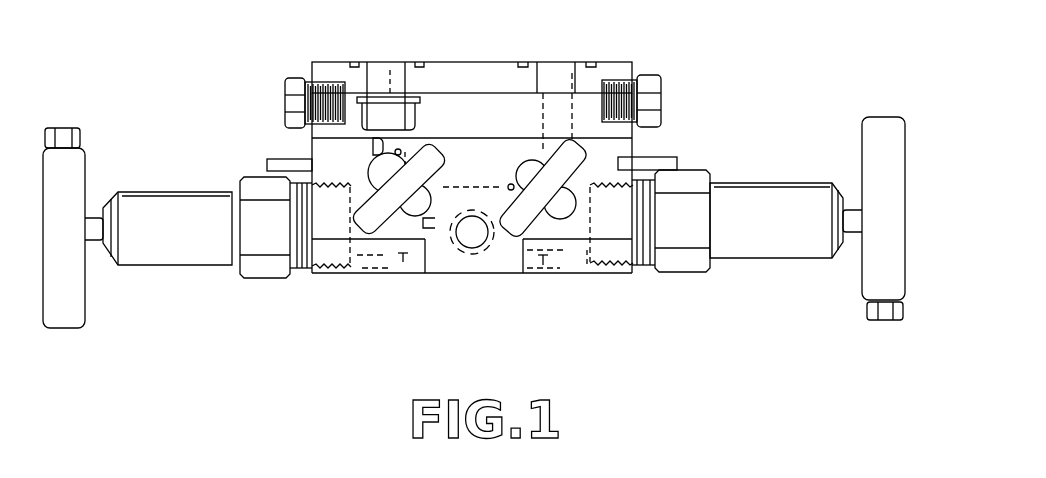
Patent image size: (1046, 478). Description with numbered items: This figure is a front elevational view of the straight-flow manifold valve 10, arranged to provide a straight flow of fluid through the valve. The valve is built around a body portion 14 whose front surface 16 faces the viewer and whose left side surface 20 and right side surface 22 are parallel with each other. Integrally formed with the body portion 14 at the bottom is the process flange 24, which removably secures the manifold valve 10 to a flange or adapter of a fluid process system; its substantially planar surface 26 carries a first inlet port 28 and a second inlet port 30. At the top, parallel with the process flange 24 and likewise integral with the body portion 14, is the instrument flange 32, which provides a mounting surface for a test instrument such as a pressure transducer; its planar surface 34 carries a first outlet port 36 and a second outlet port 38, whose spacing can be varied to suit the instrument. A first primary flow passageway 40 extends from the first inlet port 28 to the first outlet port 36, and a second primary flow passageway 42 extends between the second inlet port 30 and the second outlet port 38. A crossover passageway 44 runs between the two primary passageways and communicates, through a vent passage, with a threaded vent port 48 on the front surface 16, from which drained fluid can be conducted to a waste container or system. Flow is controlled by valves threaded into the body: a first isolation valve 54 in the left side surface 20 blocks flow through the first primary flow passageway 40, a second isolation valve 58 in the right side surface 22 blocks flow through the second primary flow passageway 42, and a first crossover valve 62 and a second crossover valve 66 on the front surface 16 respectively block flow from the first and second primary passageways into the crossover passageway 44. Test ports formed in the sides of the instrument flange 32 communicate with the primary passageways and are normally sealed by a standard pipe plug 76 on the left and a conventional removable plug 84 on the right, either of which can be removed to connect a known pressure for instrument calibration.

The straight-flow manifold valve 10 is at (208, 68).
The body portion 14 is at (677, 168).
The front surface 16 is at (455, 173).
The left side surface 20 is at (267, 165).
The right side surface 22 is at (633, 129).
The process flange 24 is at (420, 258).
The planar surface 26 is at (514, 273).
The first inlet port 28 is at (390, 263).
The second inlet port 30 is at (562, 275).
The instrument flange 32 is at (455, 87).
The planar surface 34 is at (520, 61).
The first outlet port 36 is at (387, 70).
The second outlet port 38 is at (556, 89).
The first primary flow passageway 40 is at (312, 138).
The second primary flow passageway 42 is at (580, 147).
The crossover passageway 44 is at (443, 188).
The vent port 48 is at (474, 238).
The first isolation valve 54 is at (163, 240).
The second isolation valve 58 is at (735, 233).
The first crossover valve 62 is at (377, 218).
The second crossover valve 66 is at (568, 210).
The pipe plug 76 is at (297, 104).
The removable plug 84 is at (652, 103).